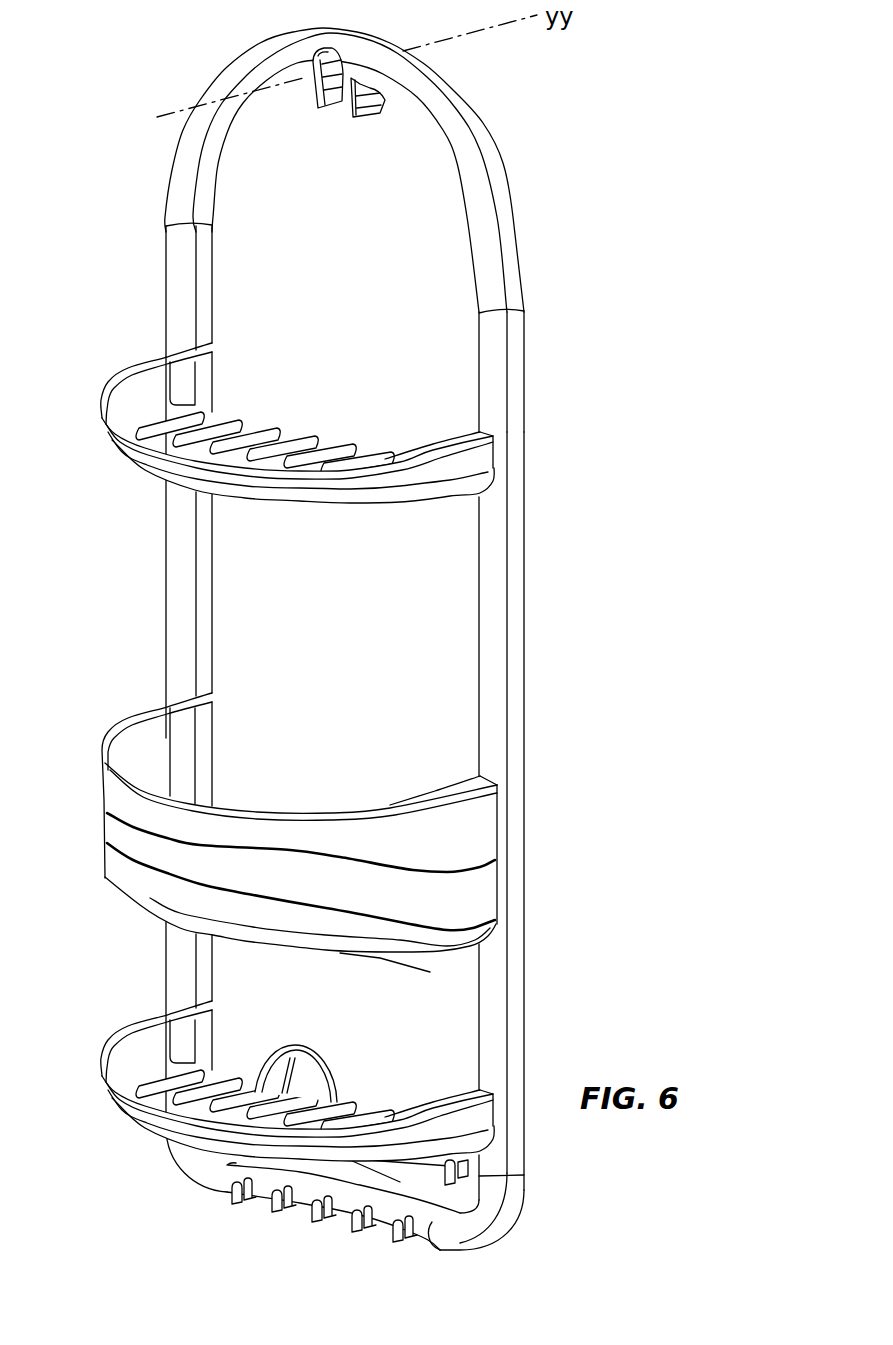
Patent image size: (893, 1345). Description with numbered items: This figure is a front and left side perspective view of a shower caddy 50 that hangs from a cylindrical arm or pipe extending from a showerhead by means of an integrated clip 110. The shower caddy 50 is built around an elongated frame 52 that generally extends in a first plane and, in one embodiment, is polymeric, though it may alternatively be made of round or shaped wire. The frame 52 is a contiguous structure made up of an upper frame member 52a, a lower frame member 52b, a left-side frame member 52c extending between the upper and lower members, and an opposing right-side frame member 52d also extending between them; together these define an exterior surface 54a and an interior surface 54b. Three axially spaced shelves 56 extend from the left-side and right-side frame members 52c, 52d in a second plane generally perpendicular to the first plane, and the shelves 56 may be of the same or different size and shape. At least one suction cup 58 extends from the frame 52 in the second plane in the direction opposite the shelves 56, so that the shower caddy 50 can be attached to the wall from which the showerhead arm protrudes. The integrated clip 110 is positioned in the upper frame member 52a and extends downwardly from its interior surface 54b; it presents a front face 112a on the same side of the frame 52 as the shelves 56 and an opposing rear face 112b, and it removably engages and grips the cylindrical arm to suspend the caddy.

The shower caddy 50 is at (539, 112).
The elongated frame 52 is at (490, 593).
The upper frame member 52a is at (440, 88).
The lower frame member 52b is at (452, 1243).
The left-side frame member 52c is at (490, 647).
The right-side frame member 52d is at (177, 607).
The exterior surface 54a is at (518, 348).
The interior surface 54b is at (204, 282).
The shelf 56 is at (104, 424).
The suction cup 58 is at (317, 1061).
The integrated clip 110 is at (337, 114).
The front face 112a is at (317, 66).
The rear face 112b is at (381, 99).